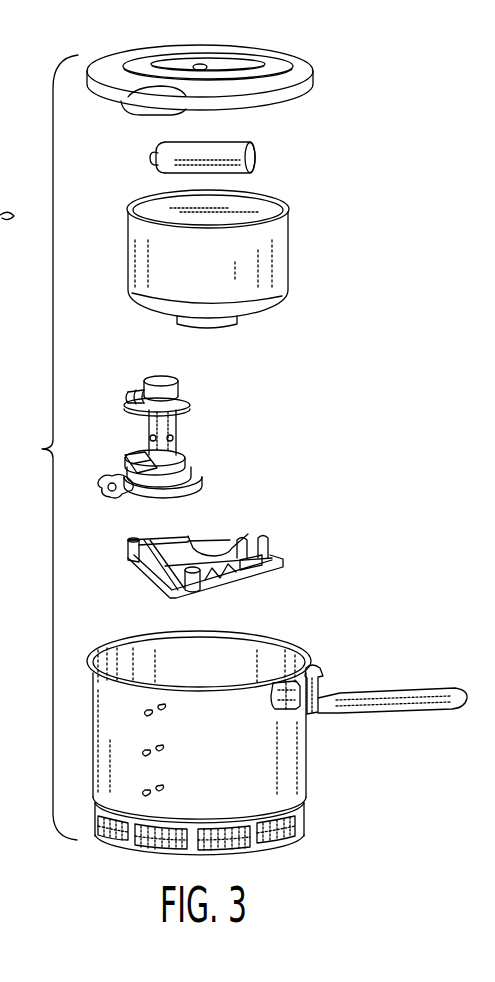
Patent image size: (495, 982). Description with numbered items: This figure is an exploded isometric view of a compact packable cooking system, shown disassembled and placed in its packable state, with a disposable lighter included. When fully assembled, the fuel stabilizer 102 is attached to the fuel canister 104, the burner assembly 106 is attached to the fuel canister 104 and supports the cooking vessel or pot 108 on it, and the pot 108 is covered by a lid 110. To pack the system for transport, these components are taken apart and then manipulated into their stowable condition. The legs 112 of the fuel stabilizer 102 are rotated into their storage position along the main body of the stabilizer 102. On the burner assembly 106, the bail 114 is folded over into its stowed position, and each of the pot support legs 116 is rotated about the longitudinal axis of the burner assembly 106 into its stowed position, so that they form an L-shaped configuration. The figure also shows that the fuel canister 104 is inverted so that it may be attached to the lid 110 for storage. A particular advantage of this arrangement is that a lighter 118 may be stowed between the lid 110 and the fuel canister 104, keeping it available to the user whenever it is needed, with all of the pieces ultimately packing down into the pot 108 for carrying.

The fuel stabilizer 102 is at (211, 548).
The fuel canister 104 is at (267, 269).
The burner assembly 106 is at (195, 419).
The cooking vessel or pot 108 is at (298, 755).
The lid 110 is at (263, 65).
The legs 112 is at (137, 573).
The bail 114 is at (181, 403).
The pot support legs 116 is at (99, 481).
The lighter 118 is at (243, 162).